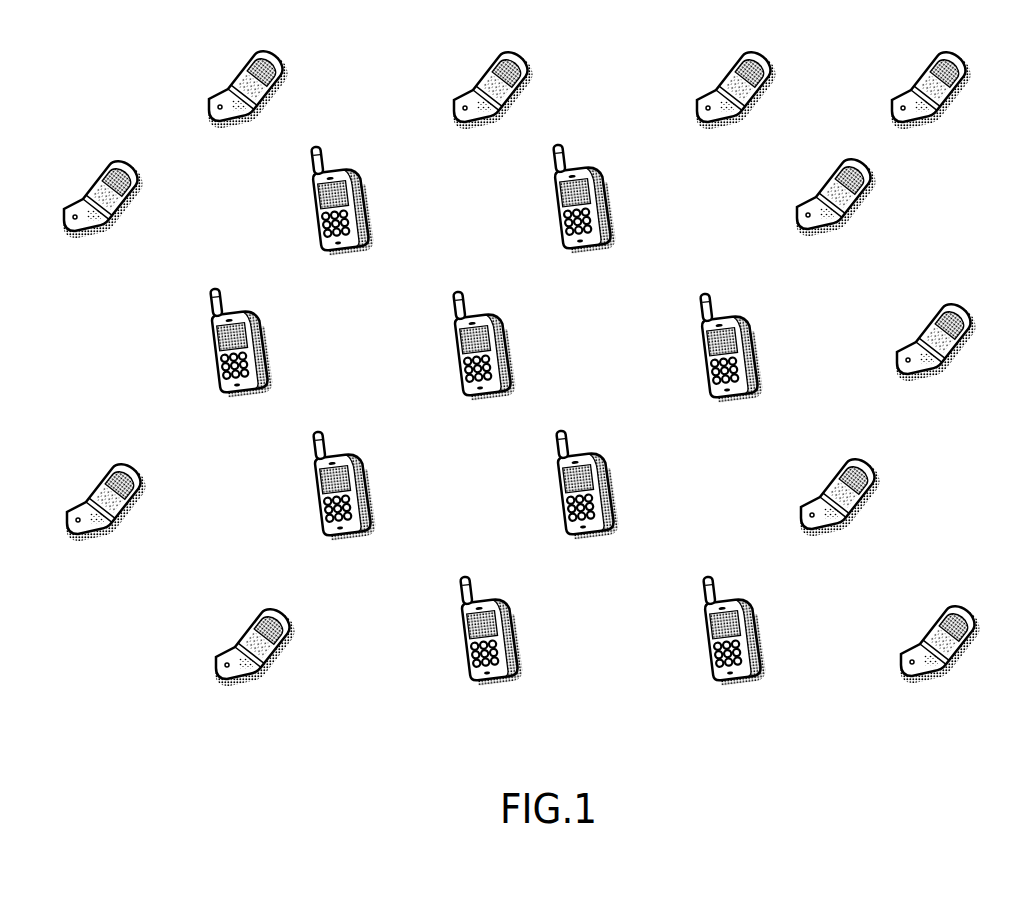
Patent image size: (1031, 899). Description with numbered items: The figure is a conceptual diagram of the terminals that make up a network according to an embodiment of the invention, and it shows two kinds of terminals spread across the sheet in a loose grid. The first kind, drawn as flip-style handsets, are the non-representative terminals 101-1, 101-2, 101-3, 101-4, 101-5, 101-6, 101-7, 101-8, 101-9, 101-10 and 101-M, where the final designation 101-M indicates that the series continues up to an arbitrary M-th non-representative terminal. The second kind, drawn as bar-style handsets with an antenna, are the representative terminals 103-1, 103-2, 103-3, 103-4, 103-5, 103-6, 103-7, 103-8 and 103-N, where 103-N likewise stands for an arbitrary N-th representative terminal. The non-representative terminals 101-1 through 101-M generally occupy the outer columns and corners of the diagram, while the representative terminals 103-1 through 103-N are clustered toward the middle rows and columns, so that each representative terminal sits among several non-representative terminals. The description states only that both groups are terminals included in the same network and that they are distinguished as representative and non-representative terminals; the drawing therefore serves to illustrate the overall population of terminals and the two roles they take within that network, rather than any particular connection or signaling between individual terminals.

The non-representative terminal 101-1 is at (283, 50).
The non-representative terminal 101-2 is at (529, 50).
The non-representative terminal 101-3 is at (768, 49).
The non-representative terminal 101-4 is at (961, 49).
The non-representative terminal 101-5 is at (133, 162).
The non-representative terminal 101-6 is at (868, 157).
The non-representative terminal 101-7 is at (971, 309).
The non-representative terminal 101-8 is at (138, 462).
The non-representative terminal 101-9 is at (874, 465).
The non-representative terminal 101-10 is at (286, 605).
The non-representative terminal 101-M is at (976, 610).
The representative terminal 103-1 is at (358, 170).
The representative terminal 103-2 is at (598, 165).
The representative terminal 103-3 is at (262, 314).
The representative terminal 103-4 is at (507, 312).
The representative terminal 103-5 is at (752, 315).
The representative terminal 103-6 is at (362, 454).
The representative terminal 103-7 is at (606, 454).
The representative terminal 103-8 is at (510, 600).
The representative terminal 103-N is at (753, 600).